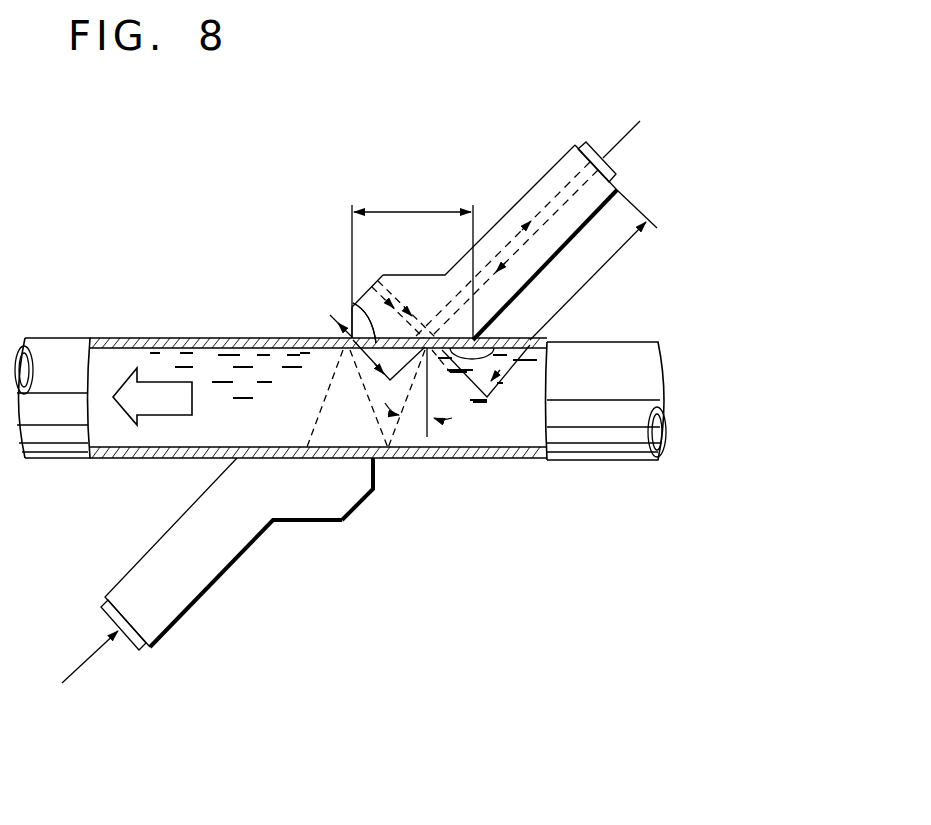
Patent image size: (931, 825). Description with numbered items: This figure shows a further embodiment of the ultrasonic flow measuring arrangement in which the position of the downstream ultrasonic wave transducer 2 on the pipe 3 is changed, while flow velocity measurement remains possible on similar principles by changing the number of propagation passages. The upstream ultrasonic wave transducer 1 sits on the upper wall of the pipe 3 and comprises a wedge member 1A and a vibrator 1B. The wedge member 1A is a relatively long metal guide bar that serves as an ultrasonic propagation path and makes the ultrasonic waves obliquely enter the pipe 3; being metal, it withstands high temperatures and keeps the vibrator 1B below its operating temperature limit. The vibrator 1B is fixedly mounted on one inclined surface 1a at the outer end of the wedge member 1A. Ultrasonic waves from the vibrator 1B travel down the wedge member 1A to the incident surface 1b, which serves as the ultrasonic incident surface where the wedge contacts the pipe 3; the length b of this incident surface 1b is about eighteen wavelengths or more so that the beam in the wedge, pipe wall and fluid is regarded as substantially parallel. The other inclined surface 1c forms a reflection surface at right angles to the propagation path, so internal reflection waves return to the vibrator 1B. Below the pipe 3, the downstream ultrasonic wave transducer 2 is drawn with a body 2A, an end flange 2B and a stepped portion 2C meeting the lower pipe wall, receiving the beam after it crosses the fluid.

The ultrasonic wave transducer 1 is at (540, 208).
The wedge member 1A is at (503, 213).
The vibrator 1B is at (613, 170).
The inclined surface 1a is at (618, 188).
The incident surface 1b is at (505, 340).
The inclined surface 1c is at (355, 304).
The ultrasonic wave transducer 2 is at (198, 596).
The light receiver body 2A is at (222, 563).
The light receiver flange 2B is at (132, 648).
The stepped portion of light receiver 2C is at (357, 507).
The pipe 3 is at (64, 340).
The length of the incident surface b is at (410, 213).